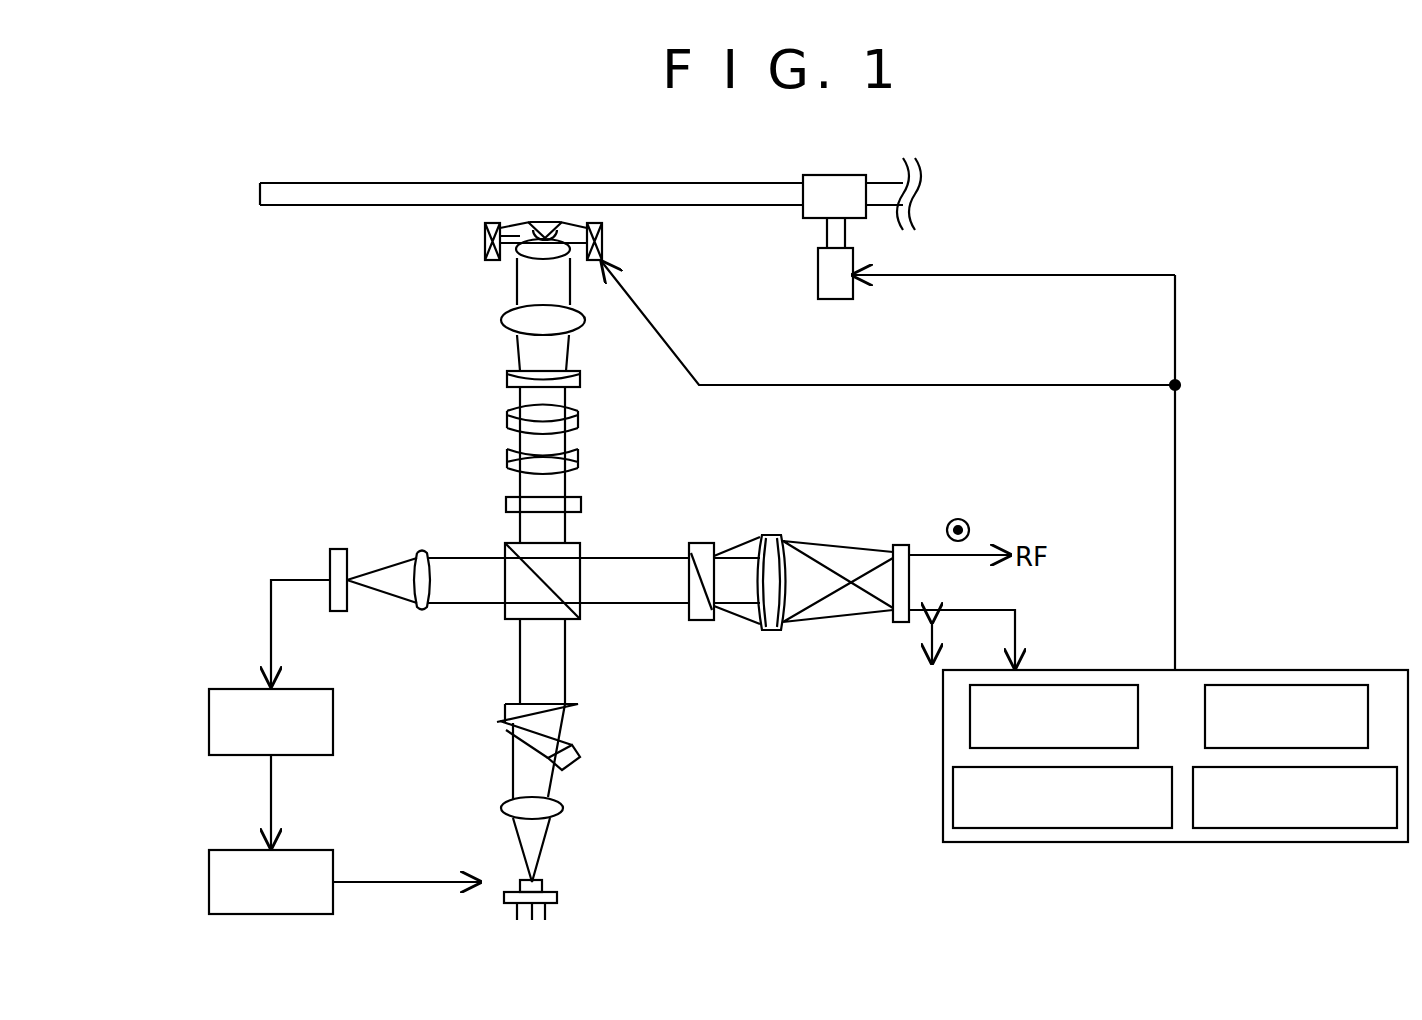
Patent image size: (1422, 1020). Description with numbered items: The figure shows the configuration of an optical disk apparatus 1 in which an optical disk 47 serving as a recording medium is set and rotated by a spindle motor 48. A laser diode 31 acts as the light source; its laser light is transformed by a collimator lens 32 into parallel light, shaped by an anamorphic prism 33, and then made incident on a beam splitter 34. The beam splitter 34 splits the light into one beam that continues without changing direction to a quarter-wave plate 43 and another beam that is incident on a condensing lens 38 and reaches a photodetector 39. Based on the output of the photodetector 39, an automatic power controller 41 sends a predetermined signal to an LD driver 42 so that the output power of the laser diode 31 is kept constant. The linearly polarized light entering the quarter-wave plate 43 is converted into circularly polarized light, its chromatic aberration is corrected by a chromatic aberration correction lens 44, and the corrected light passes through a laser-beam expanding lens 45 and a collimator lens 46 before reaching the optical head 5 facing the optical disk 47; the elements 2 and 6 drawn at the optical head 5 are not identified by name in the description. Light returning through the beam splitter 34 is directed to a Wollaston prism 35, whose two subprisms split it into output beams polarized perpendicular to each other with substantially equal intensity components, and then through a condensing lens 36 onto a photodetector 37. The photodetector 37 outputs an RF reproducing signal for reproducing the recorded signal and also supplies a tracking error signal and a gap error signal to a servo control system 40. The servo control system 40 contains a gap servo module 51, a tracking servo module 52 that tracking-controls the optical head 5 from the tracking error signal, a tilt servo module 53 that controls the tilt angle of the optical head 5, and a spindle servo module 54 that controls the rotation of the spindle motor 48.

The optical disk apparatus 1 is at (1127, 207).
The solid immersion lens 2 is at (533, 228).
The optical head 5 is at (575, 221).
The actuator 6 is at (603, 244).
The laser diode 31 is at (557, 897).
The collimator lens 32 is at (563, 808).
The anamorphic prism 33 is at (497, 720).
The beam splitter 34 is at (580, 543).
The Wollaston prism 35 is at (700, 622).
The condensing lens 36 is at (770, 633).
The photodetector 37 is at (900, 625).
The condensing lens 38 is at (418, 612).
The photodetector 39 is at (337, 549).
The servo control system 40 is at (1185, 843).
The automatic power controller 41 is at (209, 722).
The LD driver 42 is at (209, 882).
The quarter-wave plate 43 is at (506, 505).
The chromatic aberration correction lens 44 is at (498, 407).
The laser-beam expanding lens 45 is at (507, 379).
The collimator lens 46 is at (501, 320).
The optical disk 47 is at (346, 191).
The spindle motor 48 is at (818, 285).
The gap servo module 51 is at (1097, 685).
The tracking servo module 52 is at (1052, 829).
The tilt servo module 53 is at (1247, 685).
The spindle servo module 54 is at (1287, 829).